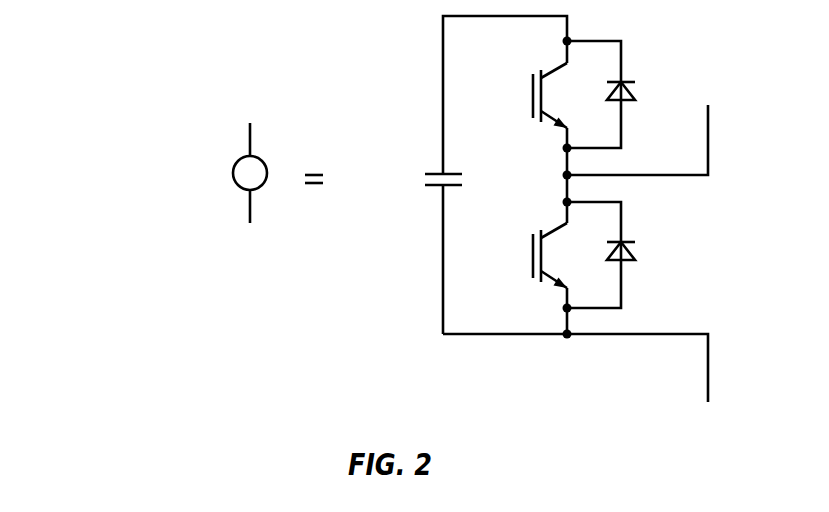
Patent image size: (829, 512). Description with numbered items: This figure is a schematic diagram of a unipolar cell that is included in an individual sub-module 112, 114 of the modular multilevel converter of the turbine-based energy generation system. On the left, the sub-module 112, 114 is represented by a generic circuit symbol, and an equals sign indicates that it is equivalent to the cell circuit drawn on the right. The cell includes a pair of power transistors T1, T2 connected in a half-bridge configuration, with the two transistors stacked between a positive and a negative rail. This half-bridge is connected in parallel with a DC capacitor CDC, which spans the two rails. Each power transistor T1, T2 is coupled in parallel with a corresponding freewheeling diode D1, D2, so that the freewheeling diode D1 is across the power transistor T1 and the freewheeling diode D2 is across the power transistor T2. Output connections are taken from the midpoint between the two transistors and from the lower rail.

The sub-module 112 is at (161, 173).
The sub-module 114 is at (177, 160).
The power transistor T1 is at (530, 95).
The power transistor T2 is at (530, 255).
The freewheeling diode D1 is at (619, 94).
The freewheeling diode D2 is at (619, 255).
The DC capacitor CDC is at (416, 185).